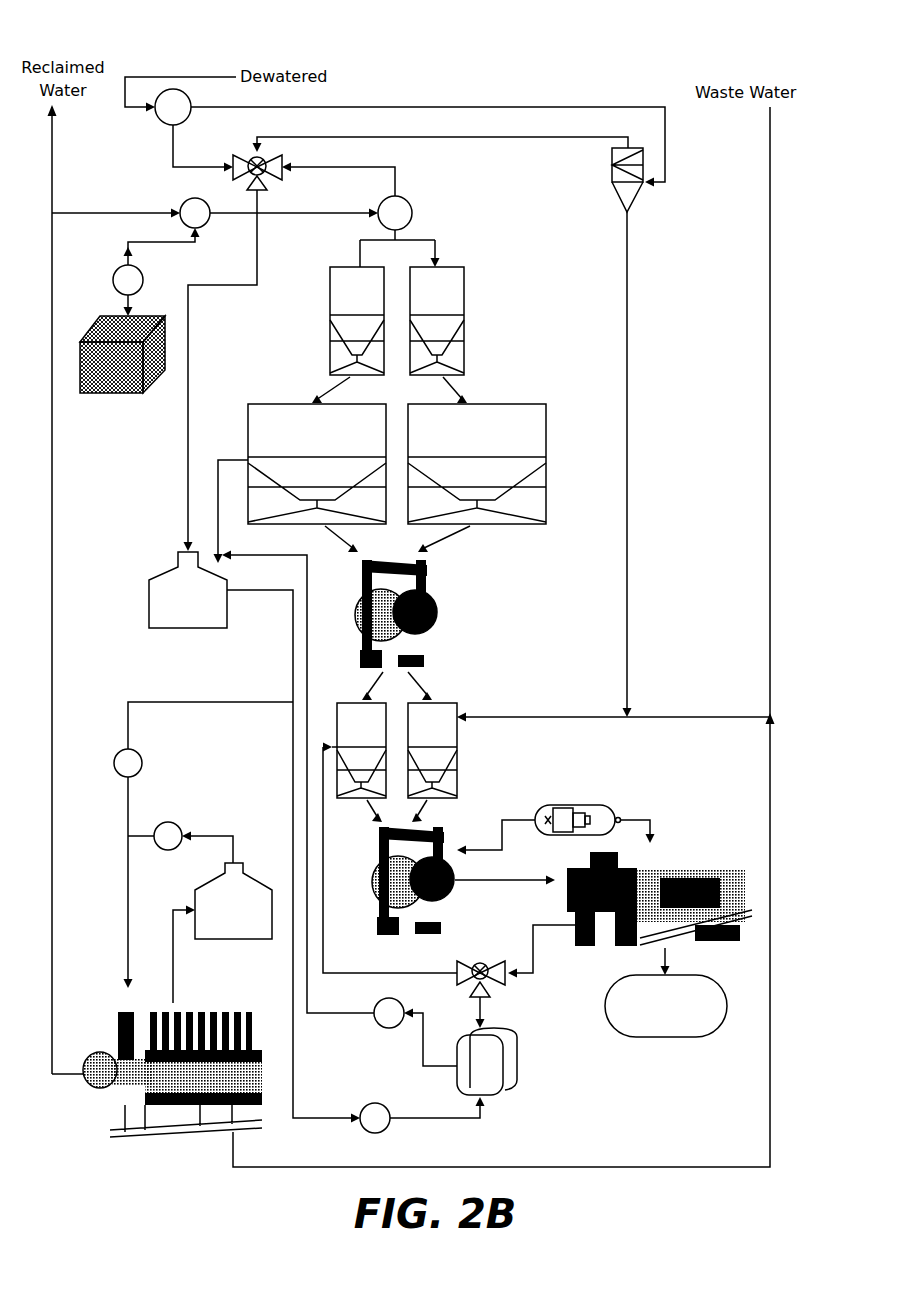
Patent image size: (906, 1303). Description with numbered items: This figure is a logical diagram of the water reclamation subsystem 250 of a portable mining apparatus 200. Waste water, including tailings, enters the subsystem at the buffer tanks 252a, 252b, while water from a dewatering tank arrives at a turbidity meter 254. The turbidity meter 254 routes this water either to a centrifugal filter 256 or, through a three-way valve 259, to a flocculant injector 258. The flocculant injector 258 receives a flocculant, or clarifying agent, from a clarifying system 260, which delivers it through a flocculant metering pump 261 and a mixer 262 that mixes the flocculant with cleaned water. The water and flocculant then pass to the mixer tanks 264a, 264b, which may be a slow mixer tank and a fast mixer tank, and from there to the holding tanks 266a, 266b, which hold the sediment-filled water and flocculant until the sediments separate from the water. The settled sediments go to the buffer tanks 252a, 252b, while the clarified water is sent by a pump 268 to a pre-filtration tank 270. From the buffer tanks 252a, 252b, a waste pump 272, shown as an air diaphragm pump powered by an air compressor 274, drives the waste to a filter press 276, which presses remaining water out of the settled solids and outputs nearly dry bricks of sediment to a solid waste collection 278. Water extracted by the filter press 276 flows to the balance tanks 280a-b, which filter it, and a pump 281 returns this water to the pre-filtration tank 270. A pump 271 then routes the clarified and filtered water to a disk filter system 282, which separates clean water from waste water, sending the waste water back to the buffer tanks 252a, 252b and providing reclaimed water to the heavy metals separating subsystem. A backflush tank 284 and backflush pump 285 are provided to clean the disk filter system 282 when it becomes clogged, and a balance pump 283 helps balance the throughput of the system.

The portable mining apparatus 200 is at (578, 80).
The water reclamation subsystem 250 is at (467, 94).
The buffer tank 252a is at (361, 750).
The buffer tank 252b is at (432, 750).
The turbidity meter 254 is at (158, 122).
The centrifugal filter 256 is at (612, 178).
The flocculant injector 258 is at (413, 213).
The three-way valve 259 is at (268, 189).
The clarifying system 260 is at (122, 354).
The flocculant metering pump 261 is at (143, 278).
The mixer 262 is at (183, 200).
The mixer tank 264a is at (357, 321).
The mixer tank 264b is at (437, 321).
The holding tank 266a is at (317, 464).
The holding tank 266b is at (477, 464).
The pump 268 is at (433, 612).
The pre-filtration tank 270 is at (187, 607).
The pump 271 is at (143, 755).
The waste pump 272 is at (446, 903).
The air compressor 274 is at (570, 806).
The filter press 276 is at (680, 868).
The solid waste collection 278 is at (666, 1006).
The balance tanks 280a-b is at (523, 1102).
The pump 281 is at (389, 1028).
The disk filter system 282 is at (147, 1135).
The balance pump 283 is at (372, 1103).
The backflush tank 284 is at (232, 918).
The backflush pump 285 is at (172, 822).